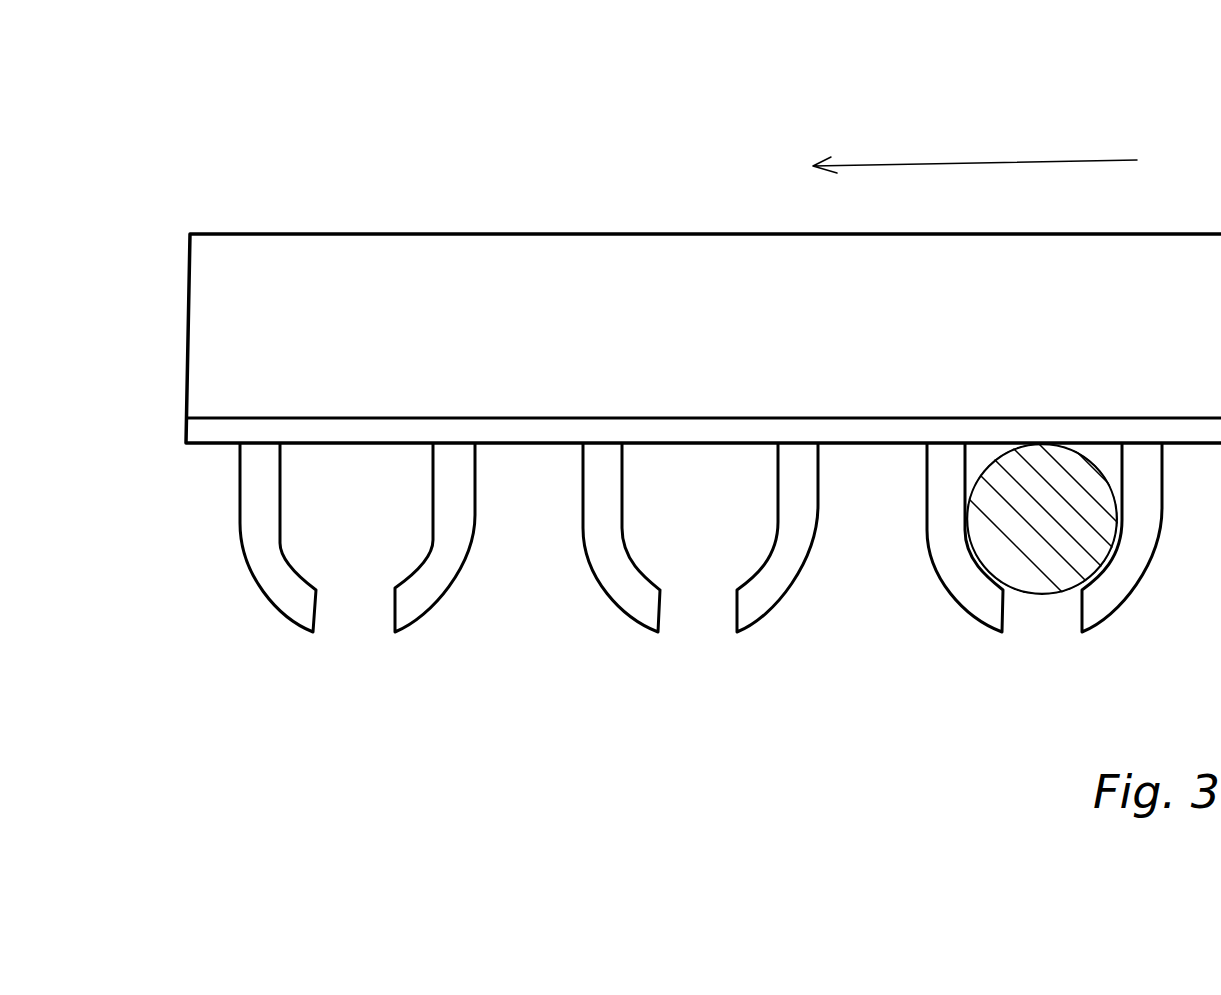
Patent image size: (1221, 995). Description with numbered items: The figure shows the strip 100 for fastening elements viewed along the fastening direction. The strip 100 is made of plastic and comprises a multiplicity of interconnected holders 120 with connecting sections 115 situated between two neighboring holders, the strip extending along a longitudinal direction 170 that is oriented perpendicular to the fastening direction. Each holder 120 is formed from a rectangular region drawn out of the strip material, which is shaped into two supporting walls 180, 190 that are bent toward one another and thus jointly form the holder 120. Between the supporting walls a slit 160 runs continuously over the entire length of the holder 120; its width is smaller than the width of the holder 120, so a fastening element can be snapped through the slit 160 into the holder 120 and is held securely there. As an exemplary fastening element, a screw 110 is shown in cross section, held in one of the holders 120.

The strip 100 is at (382, 174).
The screw 110 is at (1057, 533).
The connecting section 115 is at (531, 389).
The holder 120 is at (705, 518).
The slit 160 is at (699, 616).
The longitudinal direction 170 is at (1046, 162).
The supporting wall 180 is at (611, 555).
The supporting wall 190 is at (795, 552).